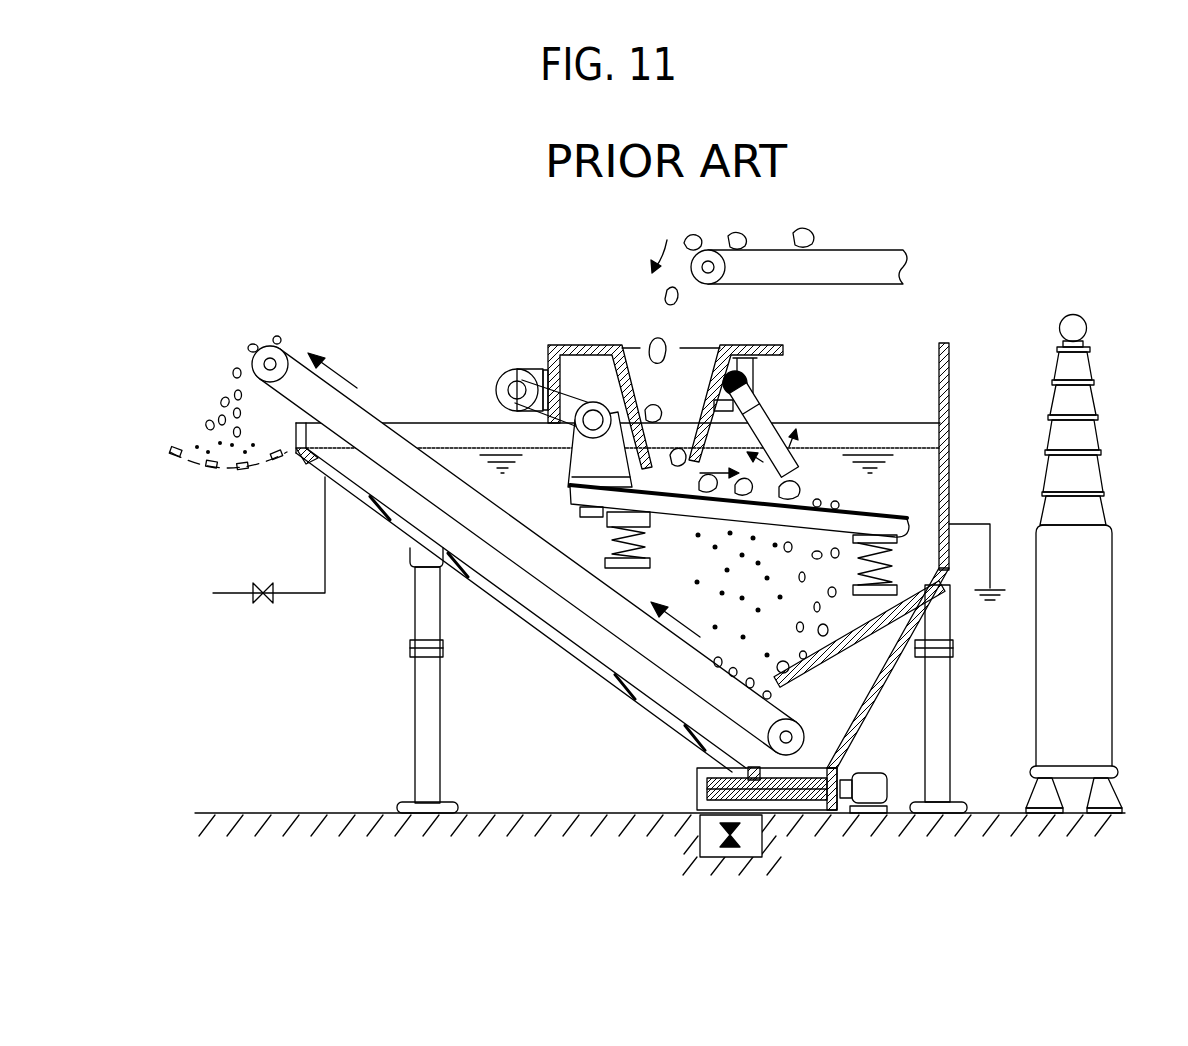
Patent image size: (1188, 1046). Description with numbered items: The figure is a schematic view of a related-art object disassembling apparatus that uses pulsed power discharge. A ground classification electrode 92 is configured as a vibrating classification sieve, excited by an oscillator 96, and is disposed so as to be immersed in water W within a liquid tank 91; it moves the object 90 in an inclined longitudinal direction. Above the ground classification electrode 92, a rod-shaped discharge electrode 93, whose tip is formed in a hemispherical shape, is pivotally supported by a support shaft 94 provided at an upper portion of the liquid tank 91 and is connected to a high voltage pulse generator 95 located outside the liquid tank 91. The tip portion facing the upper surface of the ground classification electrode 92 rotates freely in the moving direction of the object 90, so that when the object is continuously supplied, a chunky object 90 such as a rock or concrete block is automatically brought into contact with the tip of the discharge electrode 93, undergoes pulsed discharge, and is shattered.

The object 90 is at (654, 336).
The liquid tank 91 is at (594, 681).
The ground classification electrode 92 is at (573, 493).
The discharge electrode 93 is at (778, 409).
The support shaft 94 is at (747, 380).
The high voltage pulse generator 95 is at (1036, 527).
The oscillator 96 is at (594, 402).
The water W is at (452, 422).